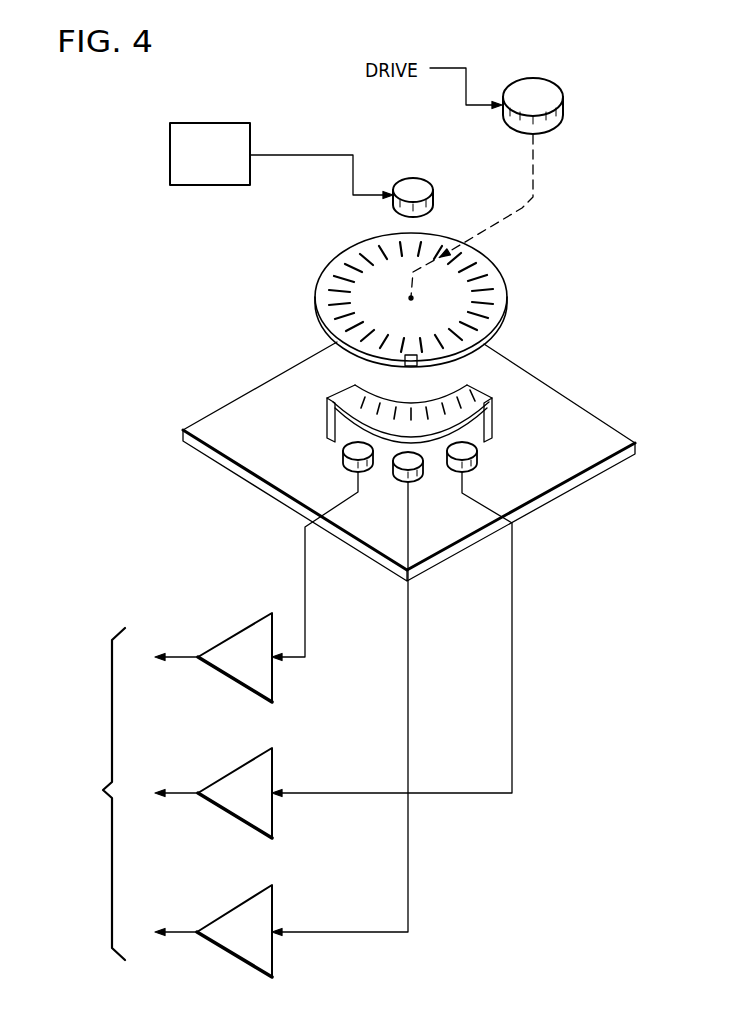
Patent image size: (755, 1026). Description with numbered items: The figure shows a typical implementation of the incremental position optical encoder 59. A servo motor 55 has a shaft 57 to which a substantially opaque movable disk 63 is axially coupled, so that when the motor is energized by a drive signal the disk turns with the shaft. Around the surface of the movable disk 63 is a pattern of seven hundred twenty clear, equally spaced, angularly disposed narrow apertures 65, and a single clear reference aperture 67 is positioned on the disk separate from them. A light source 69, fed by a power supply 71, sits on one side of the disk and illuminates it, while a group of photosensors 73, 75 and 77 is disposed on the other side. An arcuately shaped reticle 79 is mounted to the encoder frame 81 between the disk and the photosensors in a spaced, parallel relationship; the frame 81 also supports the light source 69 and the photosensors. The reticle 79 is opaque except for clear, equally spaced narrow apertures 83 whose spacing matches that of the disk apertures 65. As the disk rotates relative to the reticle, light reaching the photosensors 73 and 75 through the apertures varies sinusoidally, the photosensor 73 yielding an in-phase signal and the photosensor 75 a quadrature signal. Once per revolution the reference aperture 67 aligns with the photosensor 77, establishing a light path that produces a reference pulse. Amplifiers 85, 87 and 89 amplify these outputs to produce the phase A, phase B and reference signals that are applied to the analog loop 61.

The servo motor 55 is at (530, 78).
The shaft 57 is at (508, 217).
The optical encoder 59 is at (245, 486).
The analog loop 61 is at (71, 794).
The movable disk 63 is at (320, 331).
The apertures 65 is at (357, 262).
The reference aperture 67 is at (408, 367).
The light source 69 is at (415, 180).
The power supply 71 is at (205, 186).
The photosensor 73 is at (343, 455).
The photosensor 75 is at (477, 463).
The photosensor 77 is at (417, 480).
The reticle 79 is at (414, 414).
The frame 81 is at (237, 402).
The apertures 83 is at (354, 407).
The amplifier 85 is at (238, 630).
The amplifier 87 is at (238, 768).
The amplifier 89 is at (232, 910).